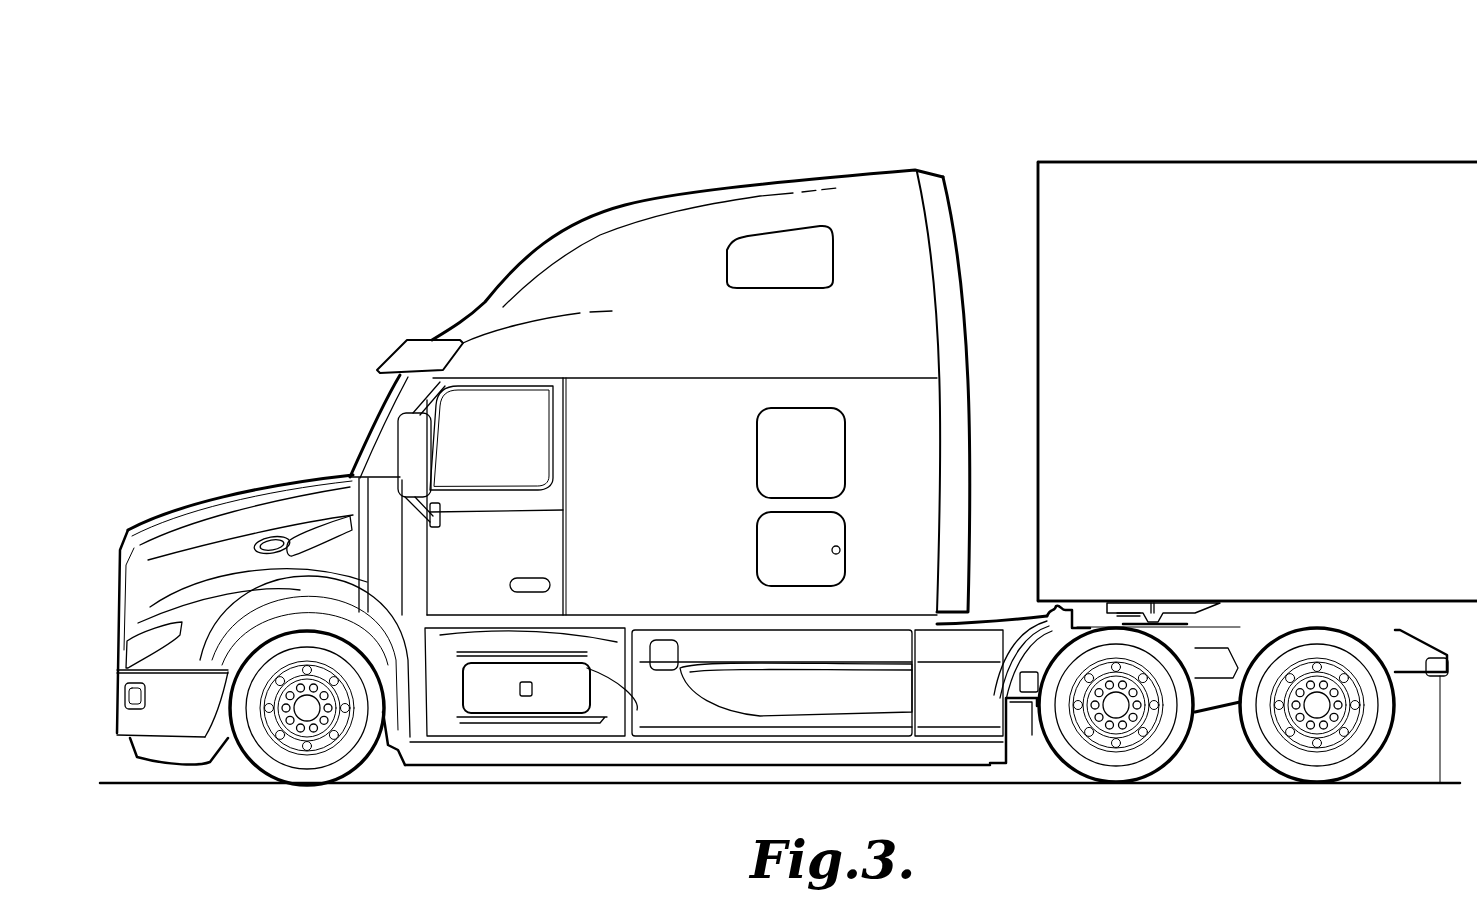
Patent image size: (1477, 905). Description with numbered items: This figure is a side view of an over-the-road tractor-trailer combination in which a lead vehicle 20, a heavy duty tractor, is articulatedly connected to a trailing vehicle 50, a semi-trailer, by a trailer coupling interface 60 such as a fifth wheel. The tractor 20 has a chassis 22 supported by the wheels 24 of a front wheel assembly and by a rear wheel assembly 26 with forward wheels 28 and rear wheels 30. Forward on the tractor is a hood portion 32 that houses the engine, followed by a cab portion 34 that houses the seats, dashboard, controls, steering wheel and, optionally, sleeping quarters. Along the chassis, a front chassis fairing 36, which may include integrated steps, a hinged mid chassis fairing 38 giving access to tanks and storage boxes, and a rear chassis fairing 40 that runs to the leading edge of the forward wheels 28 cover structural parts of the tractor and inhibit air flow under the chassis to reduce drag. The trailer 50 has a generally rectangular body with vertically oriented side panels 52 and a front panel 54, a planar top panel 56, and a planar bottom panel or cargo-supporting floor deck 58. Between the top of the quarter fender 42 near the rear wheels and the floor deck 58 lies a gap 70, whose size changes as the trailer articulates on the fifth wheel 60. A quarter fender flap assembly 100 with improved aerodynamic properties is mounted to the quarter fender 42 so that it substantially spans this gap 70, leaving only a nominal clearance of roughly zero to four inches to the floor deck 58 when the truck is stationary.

The lead vehicle 20 is at (335, 168).
The chassis 22 is at (1030, 700).
The wheels 24 is at (372, 777).
The rear wheel assembly 26 is at (1230, 792).
The forward wheels 28 is at (1152, 768).
The rear wheels 30 is at (1353, 768).
The hood portion 32 is at (208, 502).
The cab portion 34 is at (677, 195).
The front chassis fairing 36 is at (448, 707).
The mid chassis fairing 38 is at (660, 707).
The rear chassis fairing 40 is at (967, 692).
The quarter fender 42 is at (1033, 712).
The trailing vehicle 50 is at (1238, 343).
The side panels 52 is at (1146, 243).
The front panel 54 is at (1038, 238).
The top panel 56 is at (1288, 162).
The floor deck 58 is at (1368, 603).
The trailer coupling interface 60 is at (1162, 598).
The gap 70 is at (1045, 613).
The quarter fender flap assembly 100 is at (1053, 610).